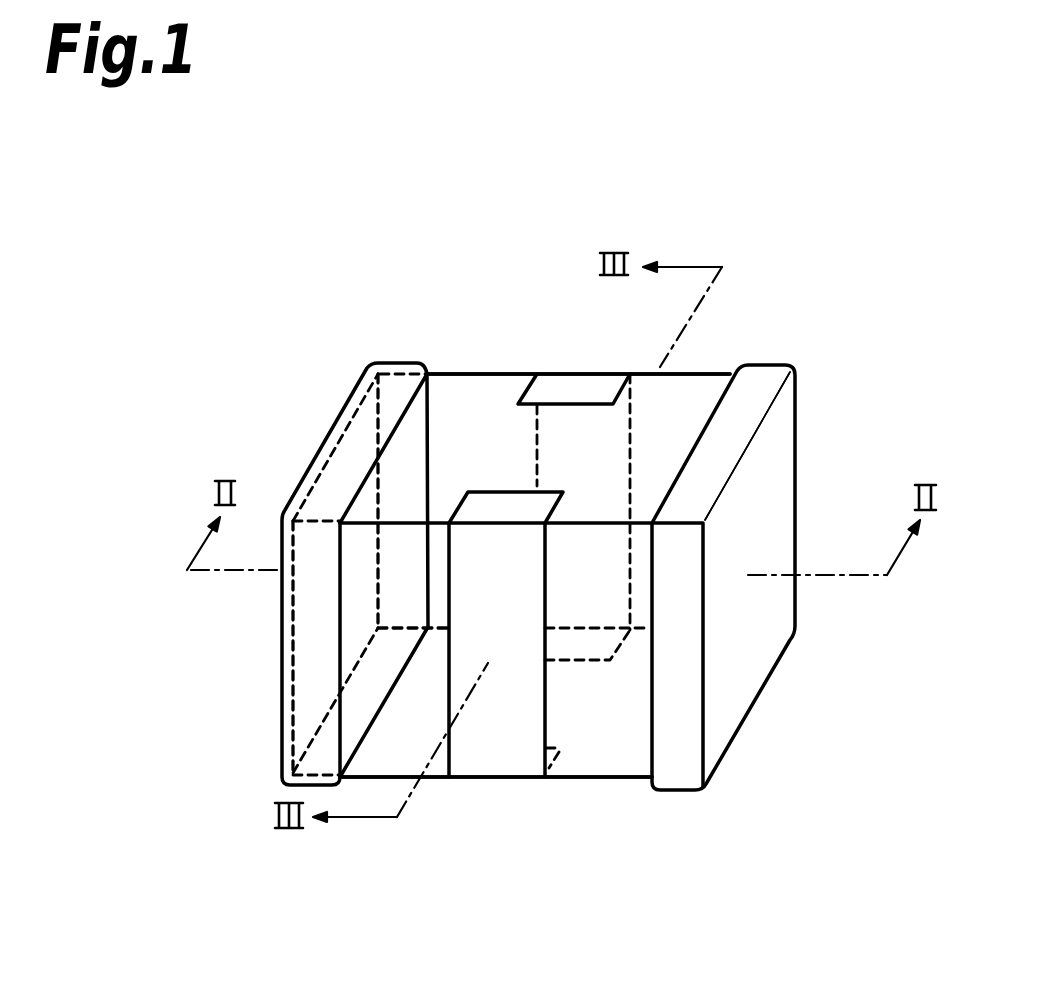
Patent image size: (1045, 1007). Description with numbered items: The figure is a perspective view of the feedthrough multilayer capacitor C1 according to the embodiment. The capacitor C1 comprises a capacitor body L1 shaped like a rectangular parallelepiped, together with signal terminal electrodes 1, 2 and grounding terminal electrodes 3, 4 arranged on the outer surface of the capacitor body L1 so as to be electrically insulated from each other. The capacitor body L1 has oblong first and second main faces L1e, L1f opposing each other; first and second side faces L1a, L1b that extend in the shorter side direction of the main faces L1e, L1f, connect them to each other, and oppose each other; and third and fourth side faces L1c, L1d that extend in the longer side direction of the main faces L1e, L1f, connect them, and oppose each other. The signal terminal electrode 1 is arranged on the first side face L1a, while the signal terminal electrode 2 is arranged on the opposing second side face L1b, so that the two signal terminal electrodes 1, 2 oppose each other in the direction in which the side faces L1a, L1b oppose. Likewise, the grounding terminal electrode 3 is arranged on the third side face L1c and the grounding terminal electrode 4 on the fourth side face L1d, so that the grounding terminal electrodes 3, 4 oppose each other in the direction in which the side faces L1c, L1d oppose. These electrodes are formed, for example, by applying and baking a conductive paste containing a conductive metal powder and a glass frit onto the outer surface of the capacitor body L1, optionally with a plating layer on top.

The feedthrough multilayer capacitor C1 is at (412, 221).
The signal terminal electrode 1 is at (358, 448).
The signal terminal electrode 2 is at (720, 457).
The grounding terminal electrode 3 is at (497, 757).
The grounding terminal electrode 4 is at (578, 383).
The capacitor body L1 is at (725, 373).
The first side face L1a is at (317, 658).
The second side face L1b is at (737, 665).
The third side face L1c is at (608, 708).
The fourth side face L1d is at (770, 463).
The first main face L1e is at (465, 390).
The second main face L1f is at (660, 735).